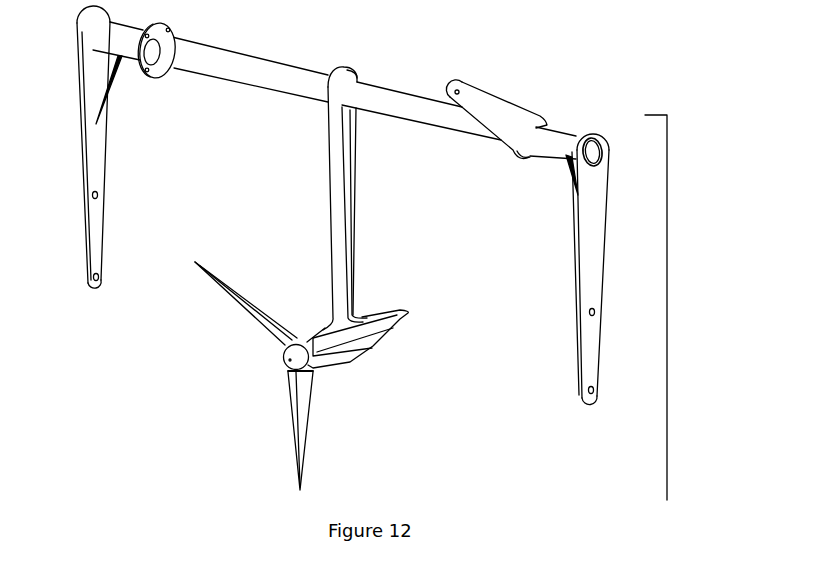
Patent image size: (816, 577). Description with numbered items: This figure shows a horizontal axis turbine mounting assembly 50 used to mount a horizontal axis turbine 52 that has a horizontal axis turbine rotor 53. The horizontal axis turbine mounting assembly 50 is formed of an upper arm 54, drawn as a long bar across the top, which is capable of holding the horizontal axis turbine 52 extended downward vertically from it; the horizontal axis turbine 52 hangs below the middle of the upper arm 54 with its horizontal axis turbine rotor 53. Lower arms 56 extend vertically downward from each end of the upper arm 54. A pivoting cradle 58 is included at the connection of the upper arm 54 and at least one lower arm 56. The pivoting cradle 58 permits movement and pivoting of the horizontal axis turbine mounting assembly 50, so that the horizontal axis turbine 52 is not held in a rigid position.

The horizontal axis turbine mounting assembly 50 is at (667, 303).
The horizontal axis turbine 52 is at (368, 348).
The horizontal axis turbine rotor 53 is at (305, 476).
The upper arm 54 is at (270, 57).
The lower arms 56 is at (82, 171).
The pivoting cradle 58 is at (595, 129).